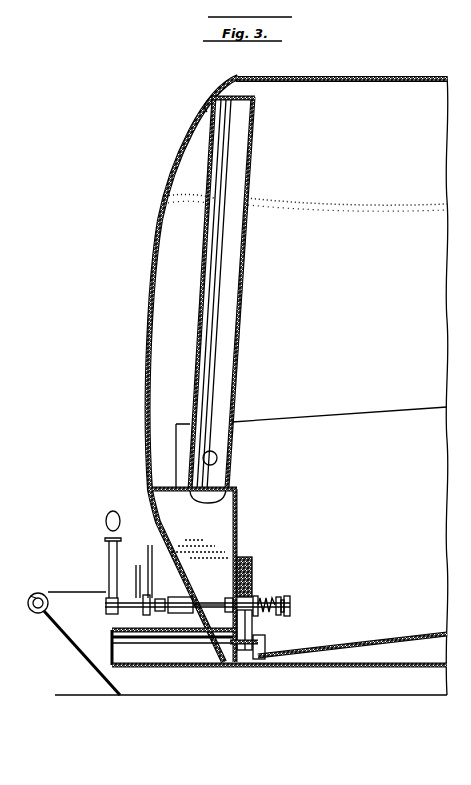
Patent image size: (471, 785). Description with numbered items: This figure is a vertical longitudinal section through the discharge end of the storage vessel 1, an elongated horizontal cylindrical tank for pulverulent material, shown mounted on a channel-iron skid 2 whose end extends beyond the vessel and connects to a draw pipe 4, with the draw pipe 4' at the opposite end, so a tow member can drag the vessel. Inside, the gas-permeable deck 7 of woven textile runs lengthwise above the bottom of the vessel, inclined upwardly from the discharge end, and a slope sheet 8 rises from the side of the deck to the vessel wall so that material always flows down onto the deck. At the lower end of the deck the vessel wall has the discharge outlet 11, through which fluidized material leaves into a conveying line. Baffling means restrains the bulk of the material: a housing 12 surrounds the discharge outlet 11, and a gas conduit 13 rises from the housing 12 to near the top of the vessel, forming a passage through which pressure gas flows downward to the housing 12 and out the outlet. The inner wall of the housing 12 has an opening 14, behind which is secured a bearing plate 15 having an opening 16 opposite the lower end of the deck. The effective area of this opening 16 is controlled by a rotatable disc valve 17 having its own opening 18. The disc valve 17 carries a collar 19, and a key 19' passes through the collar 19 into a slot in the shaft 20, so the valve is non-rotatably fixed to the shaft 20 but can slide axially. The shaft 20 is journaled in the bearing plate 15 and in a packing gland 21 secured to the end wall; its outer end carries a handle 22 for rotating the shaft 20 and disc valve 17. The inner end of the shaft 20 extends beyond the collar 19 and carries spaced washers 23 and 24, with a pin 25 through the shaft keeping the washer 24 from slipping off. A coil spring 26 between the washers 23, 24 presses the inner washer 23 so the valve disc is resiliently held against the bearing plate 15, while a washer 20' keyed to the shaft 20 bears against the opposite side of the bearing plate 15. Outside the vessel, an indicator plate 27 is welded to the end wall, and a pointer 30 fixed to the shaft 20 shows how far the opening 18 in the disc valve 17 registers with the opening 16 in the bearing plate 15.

The storage vessel 1 is at (341, 79).
The skid 2 is at (279, 680).
The draw pipe 4 is at (72, 622).
The draw pipe 4' is at (18, 569).
The gas-permeable deck 7 is at (331, 645).
The slope sheet 8 is at (343, 416).
The discharge outlet 11 is at (140, 655).
The housing 12 is at (160, 496).
The gas conduit 13 is at (233, 392).
The opening 14 is at (226, 568).
The bearing plate 15 is at (243, 560).
The opening 16 is at (236, 628).
The rotatable disc valve 17 is at (250, 568).
The opening 18 is at (247, 658).
The collar 19 is at (279, 592).
The key 19' is at (267, 586).
The shaft 20 is at (259, 595).
The washer 20' is at (212, 591).
The packing gland 21 is at (196, 612).
The handle 22 is at (108, 560).
The washer 23 is at (262, 614).
The washer 24 is at (282, 616).
The pin 25 is at (296, 612).
The coil spring 26 is at (285, 604).
The indicator plate 27 is at (148, 546).
The pointer 30 is at (137, 565).